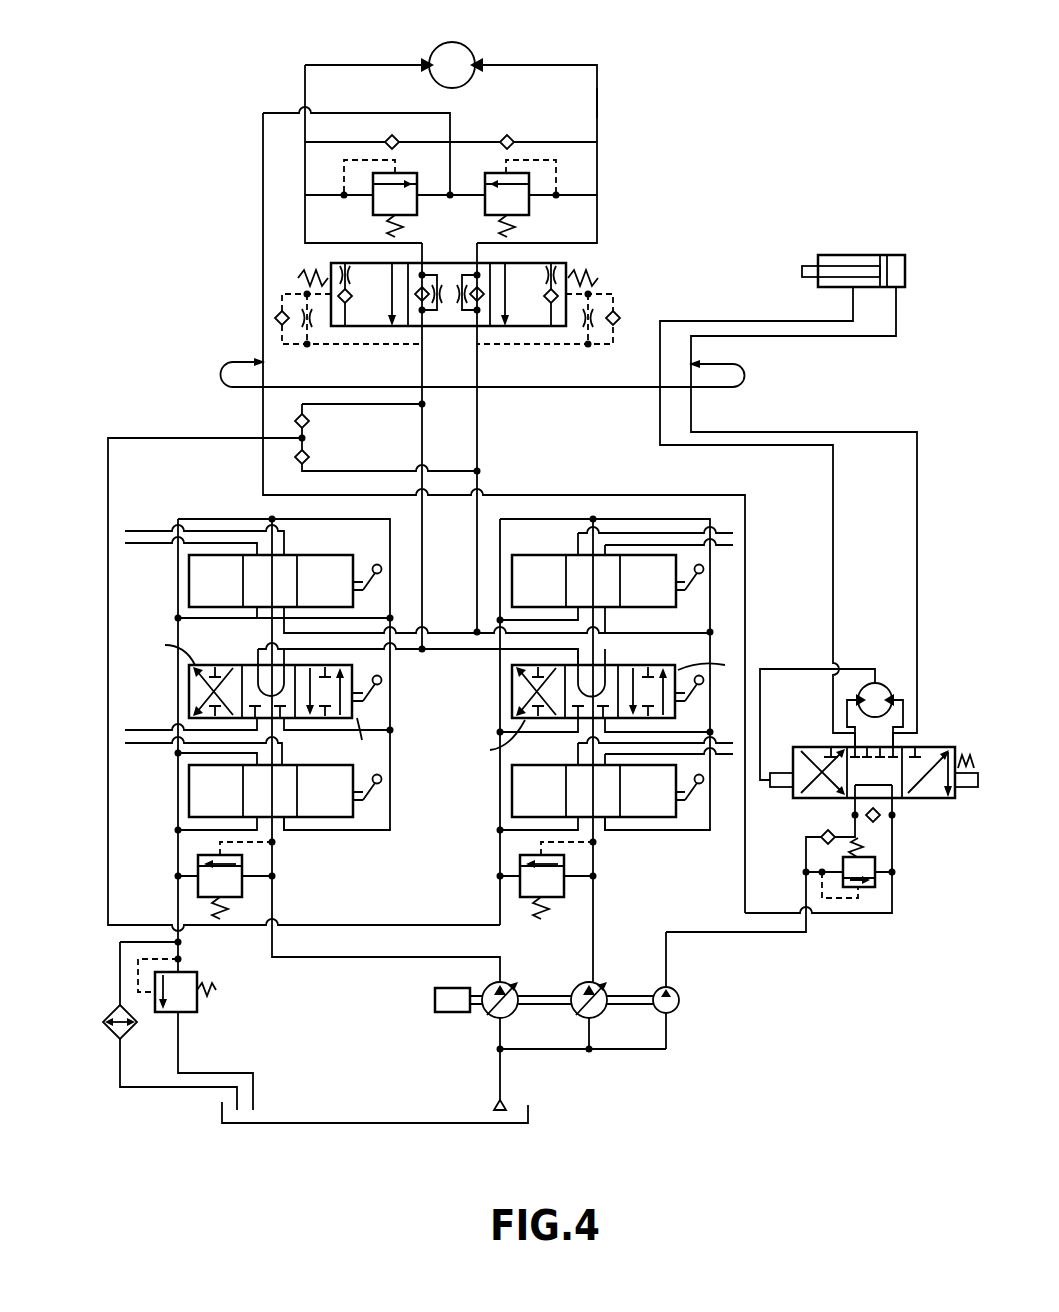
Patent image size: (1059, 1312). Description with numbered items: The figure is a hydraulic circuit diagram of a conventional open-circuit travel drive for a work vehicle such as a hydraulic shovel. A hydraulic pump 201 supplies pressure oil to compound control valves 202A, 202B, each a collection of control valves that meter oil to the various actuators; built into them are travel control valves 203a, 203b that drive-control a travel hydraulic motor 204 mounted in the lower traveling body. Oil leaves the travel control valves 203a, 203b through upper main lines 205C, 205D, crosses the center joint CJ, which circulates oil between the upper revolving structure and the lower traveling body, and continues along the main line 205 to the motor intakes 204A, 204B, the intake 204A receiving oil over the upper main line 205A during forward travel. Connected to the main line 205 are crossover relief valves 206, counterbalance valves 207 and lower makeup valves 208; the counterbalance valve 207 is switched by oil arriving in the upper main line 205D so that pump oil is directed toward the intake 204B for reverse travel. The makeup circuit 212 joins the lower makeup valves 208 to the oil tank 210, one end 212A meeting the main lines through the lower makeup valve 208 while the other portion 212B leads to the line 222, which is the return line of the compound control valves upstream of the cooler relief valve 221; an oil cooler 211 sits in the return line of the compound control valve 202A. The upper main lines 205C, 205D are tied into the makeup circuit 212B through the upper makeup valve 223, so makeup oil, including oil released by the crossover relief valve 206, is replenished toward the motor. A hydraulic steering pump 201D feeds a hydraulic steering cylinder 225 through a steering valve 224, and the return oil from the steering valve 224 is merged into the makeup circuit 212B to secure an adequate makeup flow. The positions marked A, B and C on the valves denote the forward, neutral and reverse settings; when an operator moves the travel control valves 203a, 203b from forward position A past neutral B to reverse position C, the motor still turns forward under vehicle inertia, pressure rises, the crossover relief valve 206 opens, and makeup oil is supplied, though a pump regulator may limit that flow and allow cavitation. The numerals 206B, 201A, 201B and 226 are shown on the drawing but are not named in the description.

The travel hydraulic motor 204 is at (452, 42).
The intake 204A is at (476, 60).
The intake 204B is at (428, 60).
The main line 205 is at (603, 80).
The upper main line 205A is at (598, 100).
The upper main line 205C is at (477, 453).
The upper main line 205D is at (422, 422).
The crossover relief valve 206 is at (540, 207).
The line 206B is at (305, 88).
The counterbalance valve 207 is at (492, 314).
The lower makeup valve 208 is at (470, 128).
The makeup circuit 212 is at (426, 522).
The makeup circuit 212A is at (263, 325).
The makeup circuit 212B is at (197, 438).
The upper makeup valve 223 is at (310, 433).
The hydraulic steering cylinder 225 is at (862, 255).
The center joint CJ is at (745, 376).
The forward position A is at (530, 326).
The valve position B is at (450, 326).
The reverse position C is at (376, 326).
The compound control valve 202A is at (590, 749).
The compound control valve 202B is at (411, 749).
The travel control valve 203a is at (512, 693).
The travel control valve 203b is at (189, 693).
The hydraulic pump 201 is at (599, 1021).
The variable displacement pump 201A is at (600, 982).
The variable displacement pump 201B is at (492, 1018).
The hydraulic steering pump 201D is at (679, 1000).
The oil tank 210 is at (530, 1110).
The oil cooler 211 is at (130, 1037).
The cooler relief valve 221 is at (197, 1006).
The line 222 is at (180, 950).
The steering valve 224 is at (925, 812).
The relief valve unit 226 is at (851, 915).